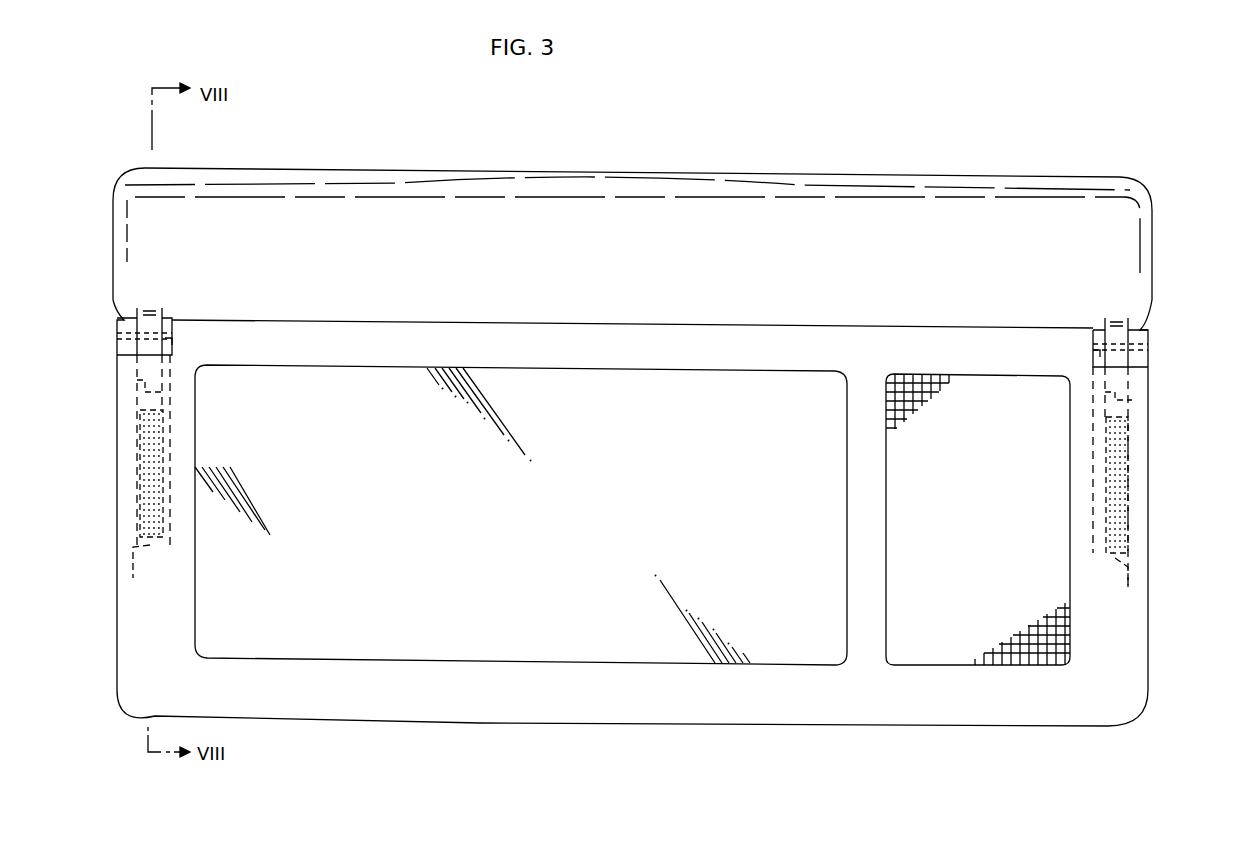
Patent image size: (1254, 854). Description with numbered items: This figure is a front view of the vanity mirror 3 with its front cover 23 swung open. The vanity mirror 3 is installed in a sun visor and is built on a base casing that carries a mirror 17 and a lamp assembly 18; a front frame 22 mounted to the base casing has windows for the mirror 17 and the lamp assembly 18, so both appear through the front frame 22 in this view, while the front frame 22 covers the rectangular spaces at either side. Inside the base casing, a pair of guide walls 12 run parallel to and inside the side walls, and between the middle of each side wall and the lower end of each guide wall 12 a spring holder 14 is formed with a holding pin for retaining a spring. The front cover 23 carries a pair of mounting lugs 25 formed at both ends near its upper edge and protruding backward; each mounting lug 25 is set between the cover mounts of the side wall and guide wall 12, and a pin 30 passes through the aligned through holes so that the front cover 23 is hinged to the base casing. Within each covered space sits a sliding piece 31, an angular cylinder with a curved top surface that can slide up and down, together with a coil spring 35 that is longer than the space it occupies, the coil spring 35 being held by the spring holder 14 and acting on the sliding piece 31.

The vanity mirror 3 is at (1038, 154).
The guide wall 12 is at (172, 428).
The spring holder 14 is at (133, 555).
The mirror 17 is at (516, 635).
The lamp assembly 18 is at (940, 648).
The front frame 22 is at (845, 698).
The front cover 23 is at (830, 170).
The mounting lug 25 is at (118, 350).
The pin 30 is at (168, 342).
The sliding piece 31 is at (135, 388).
The coil spring 35 is at (137, 455).